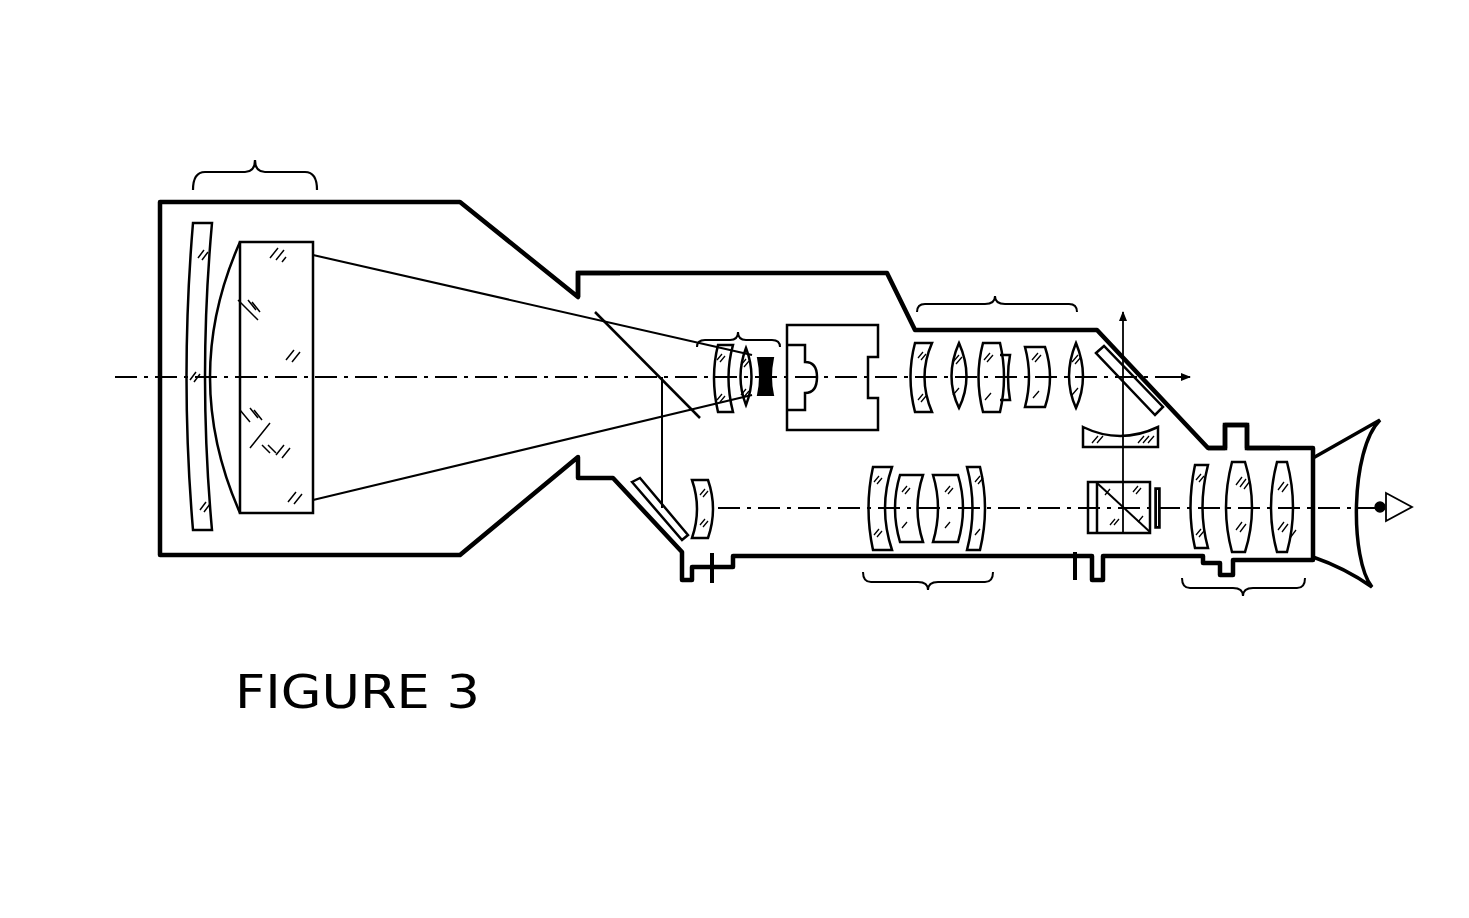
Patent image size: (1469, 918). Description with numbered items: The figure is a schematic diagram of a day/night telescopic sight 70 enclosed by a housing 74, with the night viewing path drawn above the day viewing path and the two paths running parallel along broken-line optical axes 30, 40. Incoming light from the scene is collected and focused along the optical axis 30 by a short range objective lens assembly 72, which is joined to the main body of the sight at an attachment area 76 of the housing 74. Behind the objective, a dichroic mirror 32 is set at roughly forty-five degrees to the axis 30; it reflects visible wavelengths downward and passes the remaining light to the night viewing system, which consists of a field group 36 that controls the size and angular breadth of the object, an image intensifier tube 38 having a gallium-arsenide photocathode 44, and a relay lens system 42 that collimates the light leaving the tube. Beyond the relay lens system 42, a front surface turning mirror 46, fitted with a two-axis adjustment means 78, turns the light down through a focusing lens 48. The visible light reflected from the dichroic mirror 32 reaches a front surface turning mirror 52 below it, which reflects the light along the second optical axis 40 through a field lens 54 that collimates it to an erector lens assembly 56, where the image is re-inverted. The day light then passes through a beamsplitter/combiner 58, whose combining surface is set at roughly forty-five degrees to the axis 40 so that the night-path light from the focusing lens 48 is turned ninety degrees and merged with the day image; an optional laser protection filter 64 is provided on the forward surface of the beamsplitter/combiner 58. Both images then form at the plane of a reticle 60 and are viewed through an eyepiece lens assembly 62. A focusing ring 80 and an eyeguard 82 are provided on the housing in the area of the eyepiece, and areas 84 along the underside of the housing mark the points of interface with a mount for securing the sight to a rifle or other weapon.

The optical axis 30 is at (127, 378).
The dichroic mirror 32 is at (635, 347).
The field group 36 is at (738, 355).
The image intensifier tube 38 is at (840, 322).
The second optical axis 40 is at (825, 508).
The relay lens system 42 is at (997, 338).
The gallium-arsenide photocathode 44 is at (787, 345).
The front surface turning mirror 46 is at (1163, 398).
The focusing lens 48 is at (1162, 427).
The front surface turning mirror 52 is at (632, 507).
The field lens 54 is at (678, 548).
The erector lens assembly 56 is at (928, 545).
The beamsplitter/combiner 58 is at (1122, 537).
The reticle 60 is at (1160, 533).
The eyepiece lens assembly 62 is at (1243, 543).
The laser protection filter 64 is at (1085, 525).
The sight 70 is at (777, 140).
The short range objective lens assembly 72 is at (255, 148).
The housing 74 is at (425, 198).
The attachment area 76 is at (583, 268).
The two-axis adjustment means 78 is at (1123, 318).
The focusing ring 80 is at (1248, 432).
The eyeguard 82 is at (1382, 422).
The mounting interface areas 84 is at (712, 583).